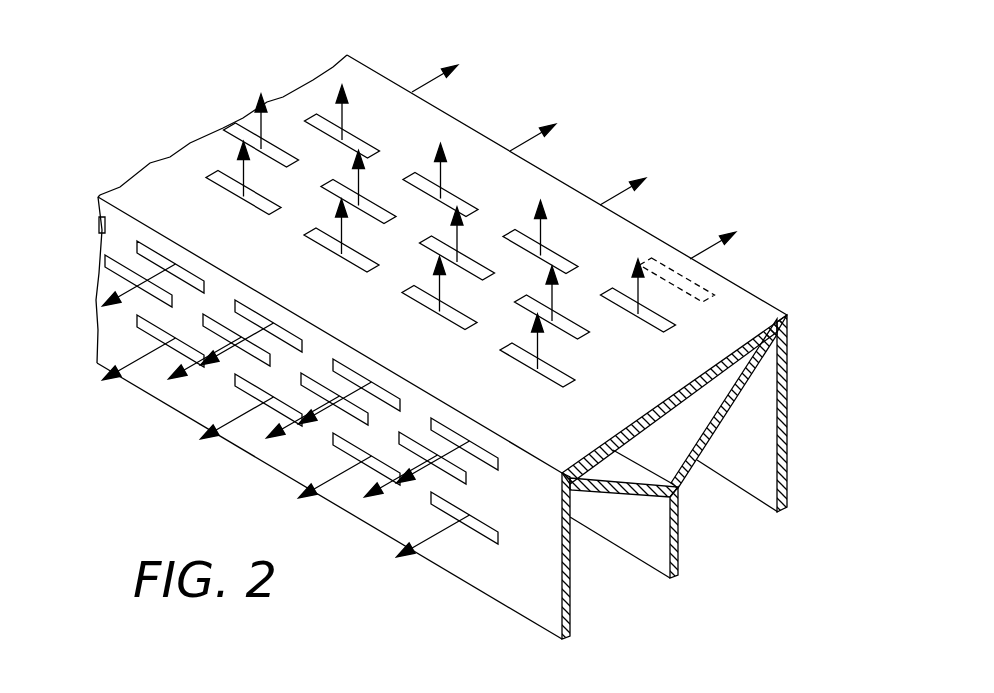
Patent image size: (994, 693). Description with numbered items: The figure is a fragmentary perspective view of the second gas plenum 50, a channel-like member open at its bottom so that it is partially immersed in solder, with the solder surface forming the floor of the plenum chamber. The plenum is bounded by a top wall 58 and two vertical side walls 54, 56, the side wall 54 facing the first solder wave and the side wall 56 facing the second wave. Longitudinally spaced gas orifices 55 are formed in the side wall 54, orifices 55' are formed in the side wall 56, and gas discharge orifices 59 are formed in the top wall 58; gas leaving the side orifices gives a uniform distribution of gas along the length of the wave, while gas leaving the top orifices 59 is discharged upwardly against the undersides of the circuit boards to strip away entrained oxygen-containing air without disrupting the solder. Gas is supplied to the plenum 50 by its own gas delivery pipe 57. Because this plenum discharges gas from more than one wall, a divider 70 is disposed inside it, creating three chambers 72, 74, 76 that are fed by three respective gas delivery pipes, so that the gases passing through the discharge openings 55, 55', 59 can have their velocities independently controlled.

The second gas plenum 50 is at (789, 330).
The side wall 54 is at (392, 522).
The gas orifices 55 is at (291, 433).
The orifices 55' is at (732, 265).
The side wall 56 is at (767, 452).
The gas delivery pipe 57 is at (242, 131).
The top wall 58 is at (594, 432).
The gas discharge orifices 59 is at (607, 292).
The divider 70 is at (678, 547).
The chamber 72 is at (610, 573).
The chamber 74 is at (723, 515).
The chamber 76 is at (717, 398).